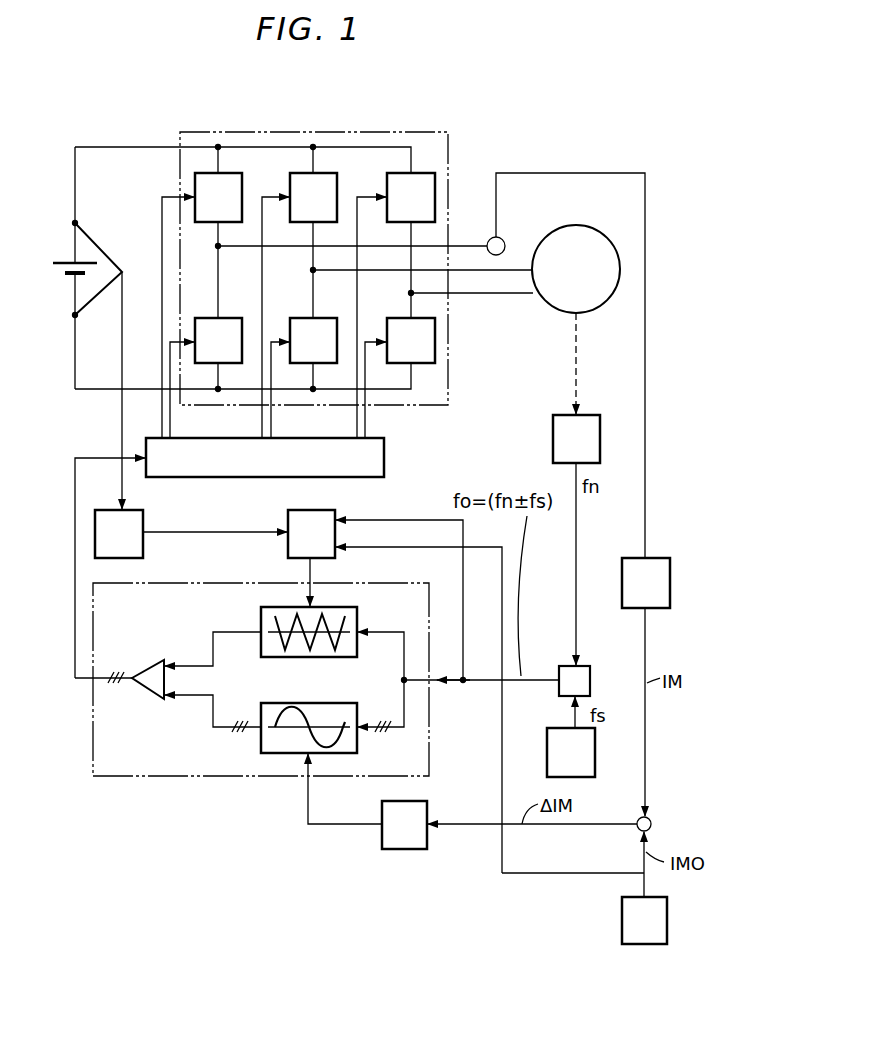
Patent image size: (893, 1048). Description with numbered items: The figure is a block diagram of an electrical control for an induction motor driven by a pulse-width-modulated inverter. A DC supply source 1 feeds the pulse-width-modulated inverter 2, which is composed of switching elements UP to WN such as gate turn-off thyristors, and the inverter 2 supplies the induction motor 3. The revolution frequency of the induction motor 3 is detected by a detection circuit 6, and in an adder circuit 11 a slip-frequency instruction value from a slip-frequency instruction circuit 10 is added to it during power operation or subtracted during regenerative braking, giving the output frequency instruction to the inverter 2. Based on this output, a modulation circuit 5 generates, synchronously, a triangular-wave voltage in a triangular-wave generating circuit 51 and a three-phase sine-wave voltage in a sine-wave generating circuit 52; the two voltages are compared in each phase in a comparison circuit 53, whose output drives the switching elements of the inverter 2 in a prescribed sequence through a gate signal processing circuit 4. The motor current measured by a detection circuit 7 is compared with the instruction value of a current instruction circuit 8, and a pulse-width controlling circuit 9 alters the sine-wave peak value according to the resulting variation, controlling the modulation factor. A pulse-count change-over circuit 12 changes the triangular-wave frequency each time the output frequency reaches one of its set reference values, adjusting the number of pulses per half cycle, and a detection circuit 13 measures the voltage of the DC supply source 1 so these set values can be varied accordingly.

The DC supply source 1 is at (70, 260).
The pulse-width-modulated inverter 2 is at (329, 132).
The induction motor 3 is at (431, 365).
The gate signal processing circuit 4 is at (265, 457).
The modulation circuit 5 is at (252, 705).
The triangular-wave generating circuit 51 is at (261, 617).
The sine-wave generating circuit 52 is at (261, 740).
The comparison circuit 53 is at (153, 670).
The detection circuit 6 is at (576, 439).
The detection circuit 7 is at (646, 583).
The current instruction circuit 8 is at (644, 920).
The pulse-width controlling circuit 9 is at (404, 825).
The slip-frequency instruction circuit 10 is at (571, 752).
The adder circuit 11 is at (574, 681).
The pulse-count change-over circuit 12 is at (311, 534).
The detection circuit 13 is at (119, 534).